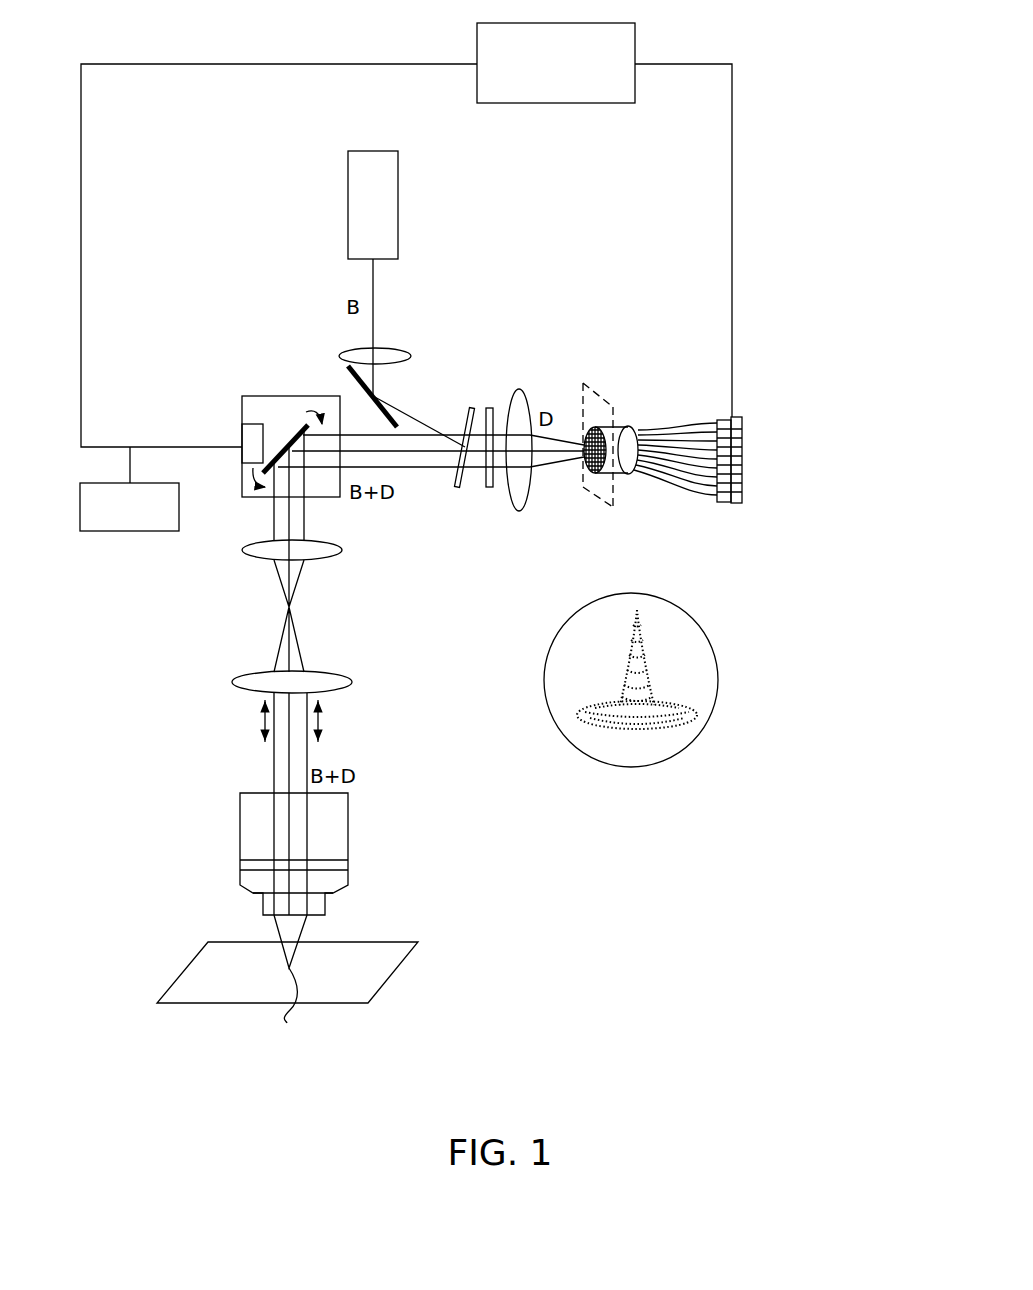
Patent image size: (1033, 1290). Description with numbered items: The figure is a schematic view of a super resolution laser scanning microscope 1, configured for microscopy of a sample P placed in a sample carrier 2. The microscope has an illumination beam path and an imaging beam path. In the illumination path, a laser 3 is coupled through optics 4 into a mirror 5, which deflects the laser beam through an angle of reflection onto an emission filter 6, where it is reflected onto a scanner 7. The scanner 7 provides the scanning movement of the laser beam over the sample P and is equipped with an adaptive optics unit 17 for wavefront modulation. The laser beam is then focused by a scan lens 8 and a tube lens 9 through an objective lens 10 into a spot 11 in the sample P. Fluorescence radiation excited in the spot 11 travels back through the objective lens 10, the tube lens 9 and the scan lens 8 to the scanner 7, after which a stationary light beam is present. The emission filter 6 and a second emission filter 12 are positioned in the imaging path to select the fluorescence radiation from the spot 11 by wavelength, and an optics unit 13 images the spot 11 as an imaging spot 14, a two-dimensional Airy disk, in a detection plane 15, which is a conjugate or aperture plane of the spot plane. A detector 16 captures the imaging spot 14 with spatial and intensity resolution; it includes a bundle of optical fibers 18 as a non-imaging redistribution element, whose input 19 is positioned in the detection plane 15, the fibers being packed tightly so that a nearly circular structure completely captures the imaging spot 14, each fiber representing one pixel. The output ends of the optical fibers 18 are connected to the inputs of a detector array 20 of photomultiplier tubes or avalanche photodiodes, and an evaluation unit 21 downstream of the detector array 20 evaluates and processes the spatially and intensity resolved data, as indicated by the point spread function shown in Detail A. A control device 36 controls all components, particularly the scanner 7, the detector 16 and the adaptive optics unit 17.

The super resolution laser scanning microscope 1 is at (160, 608).
The sample carrier 2 is at (193, 975).
The laser 3 is at (398, 225).
The optics 4 is at (411, 356).
The mirror 5 is at (348, 367).
The emission filter 6 is at (458, 490).
The scanner 7 is at (266, 396).
The scan lens 8 is at (342, 548).
The tube lens 9 is at (352, 680).
The objective lens 10 is at (348, 840).
The spot 11 is at (274, 1023).
The emission filter 12 is at (494, 400).
The optics unit 13 is at (519, 511).
The imaging spot 14 is at (598, 428).
The detection plane 15 is at (613, 507).
The detector 16 is at (692, 515).
The adaptive optics unit 17 is at (252, 444).
The optical fibers 18 is at (678, 422).
The input 19 is at (593, 603).
The detector array 20 is at (745, 416).
The evaluation unit 21 is at (635, 35).
The control device 36 is at (78, 510).
The Detail A is at (712, 650).
The sample P is at (303, 972).